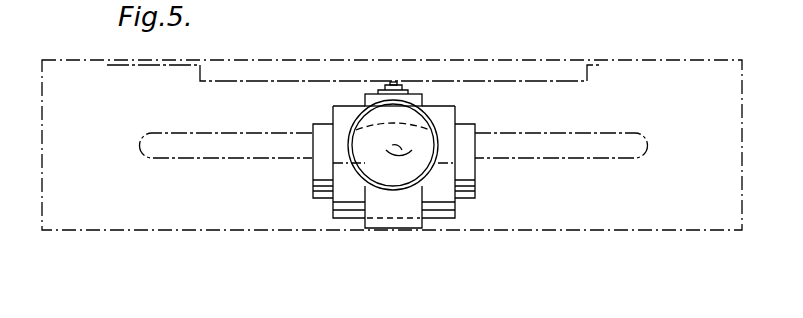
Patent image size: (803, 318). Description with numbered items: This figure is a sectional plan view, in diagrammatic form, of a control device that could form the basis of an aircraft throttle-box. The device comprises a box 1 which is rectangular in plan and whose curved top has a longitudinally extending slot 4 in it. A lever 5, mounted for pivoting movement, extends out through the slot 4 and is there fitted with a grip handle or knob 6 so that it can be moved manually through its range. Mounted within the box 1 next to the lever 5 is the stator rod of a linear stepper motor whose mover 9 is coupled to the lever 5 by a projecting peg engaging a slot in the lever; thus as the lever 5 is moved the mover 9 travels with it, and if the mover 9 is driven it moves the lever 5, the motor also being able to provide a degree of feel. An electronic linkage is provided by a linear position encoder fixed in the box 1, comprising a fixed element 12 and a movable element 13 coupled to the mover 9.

The box 1 is at (146, 232).
The slot 4 is at (595, 140).
The lever 5 is at (380, 213).
The grip handle or knob 6 is at (370, 133).
The mover 9 is at (456, 200).
The fixed element 12 is at (398, 80).
The movable element 13 is at (400, 82).